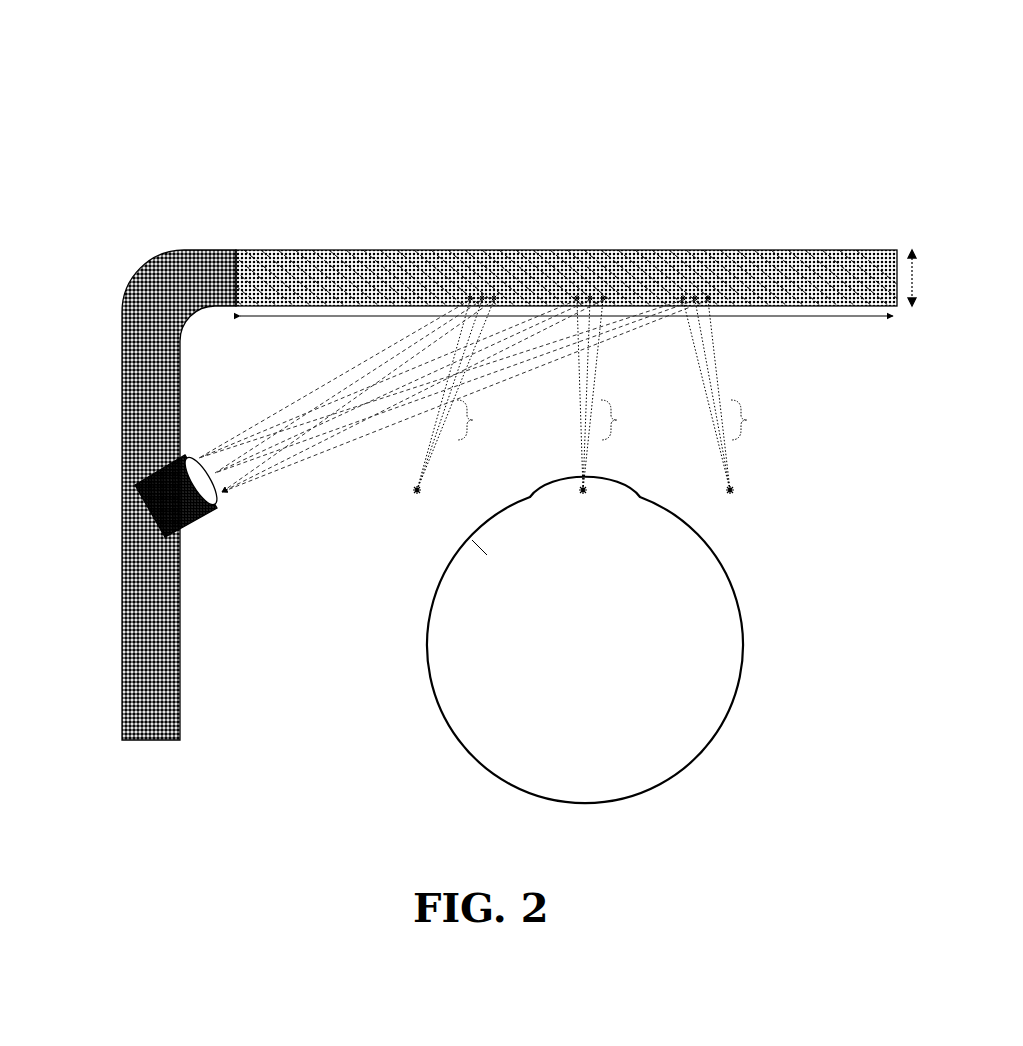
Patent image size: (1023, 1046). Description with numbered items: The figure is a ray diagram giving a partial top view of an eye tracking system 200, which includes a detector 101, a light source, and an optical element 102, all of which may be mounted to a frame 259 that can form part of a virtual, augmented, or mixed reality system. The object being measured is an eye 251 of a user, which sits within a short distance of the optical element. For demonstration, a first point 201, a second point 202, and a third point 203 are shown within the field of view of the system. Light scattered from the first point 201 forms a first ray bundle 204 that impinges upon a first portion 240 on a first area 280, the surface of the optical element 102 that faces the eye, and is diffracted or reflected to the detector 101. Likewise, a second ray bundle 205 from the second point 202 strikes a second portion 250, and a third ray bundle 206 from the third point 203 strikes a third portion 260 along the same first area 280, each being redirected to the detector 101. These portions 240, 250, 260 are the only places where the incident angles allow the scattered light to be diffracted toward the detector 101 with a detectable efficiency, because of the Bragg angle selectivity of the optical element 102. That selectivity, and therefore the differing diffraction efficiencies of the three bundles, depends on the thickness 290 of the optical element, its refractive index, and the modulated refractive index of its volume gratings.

The eye tracking system 200 is at (689, 66).
The optical element 102 is at (300, 252).
The frame 259 is at (158, 270).
The detector 101 is at (170, 511).
The first portion 240 is at (482, 258).
The second portion 250 is at (592, 254).
The third portion 260 is at (692, 255).
The first area 280 is at (866, 308).
The thickness 290 is at (912, 278).
The first point 201 is at (416, 494).
The second point 202 is at (586, 493).
The third point 203 is at (737, 491).
The first ray bundle 204 is at (473, 395).
The second ray bundle 205 is at (623, 395).
The third ray bundle 206 is at (746, 395).
The eye 251 is at (742, 592).